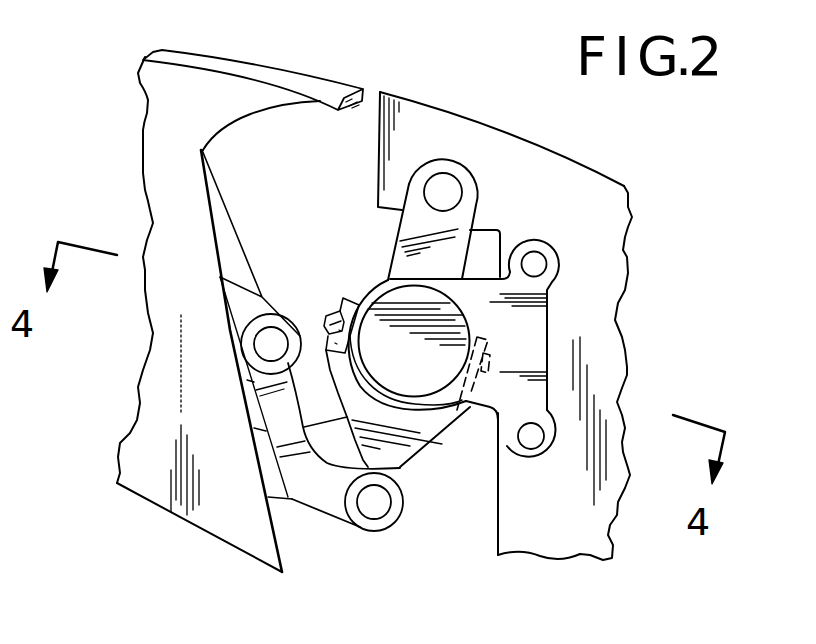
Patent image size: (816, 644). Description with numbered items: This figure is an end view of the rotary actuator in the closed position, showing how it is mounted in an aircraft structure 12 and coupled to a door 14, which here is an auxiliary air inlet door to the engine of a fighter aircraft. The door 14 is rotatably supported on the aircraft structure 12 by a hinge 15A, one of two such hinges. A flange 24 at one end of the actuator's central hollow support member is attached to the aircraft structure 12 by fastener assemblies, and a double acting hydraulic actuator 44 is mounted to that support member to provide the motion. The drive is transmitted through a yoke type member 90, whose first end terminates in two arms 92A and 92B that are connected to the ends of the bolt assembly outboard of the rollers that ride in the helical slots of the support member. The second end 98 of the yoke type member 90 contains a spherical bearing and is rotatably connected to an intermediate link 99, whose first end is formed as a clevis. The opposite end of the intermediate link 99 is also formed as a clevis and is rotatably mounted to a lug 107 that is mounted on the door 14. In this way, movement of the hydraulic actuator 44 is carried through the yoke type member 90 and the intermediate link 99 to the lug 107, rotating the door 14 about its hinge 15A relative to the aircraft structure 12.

The aircraft structure 12 is at (538, 557).
The door 14 is at (287, 63).
The hinge 15A is at (455, 160).
The flange 24 is at (627, 256).
The double acting hydraulic actuator 44 is at (468, 320).
The yoke type member 90 is at (443, 435).
The arm 92A is at (352, 297).
The arm 92B is at (490, 343).
The second end of the yoke member 98 is at (328, 327).
The intermediate link 99 is at (330, 515).
The lug 107 is at (236, 278).